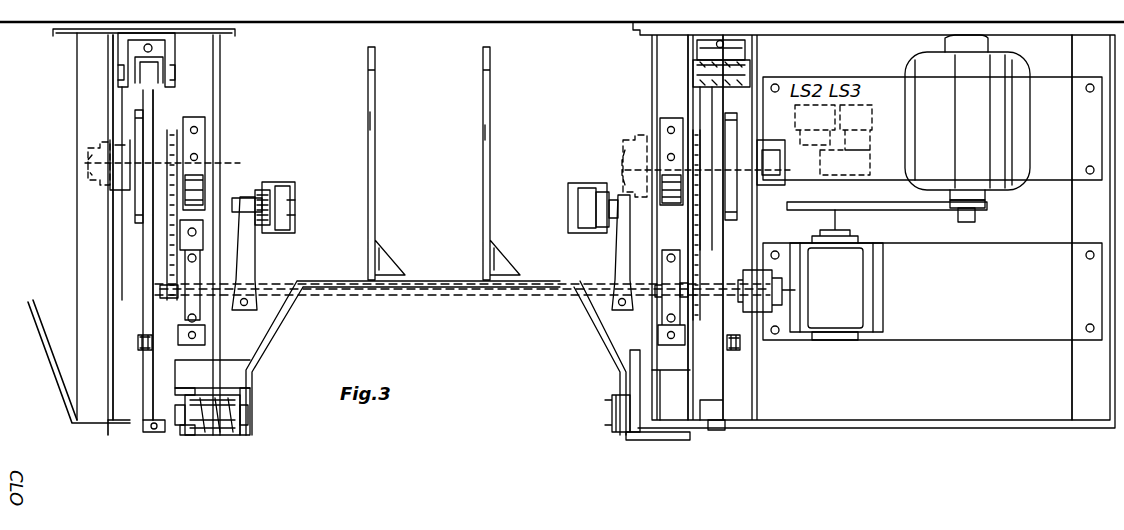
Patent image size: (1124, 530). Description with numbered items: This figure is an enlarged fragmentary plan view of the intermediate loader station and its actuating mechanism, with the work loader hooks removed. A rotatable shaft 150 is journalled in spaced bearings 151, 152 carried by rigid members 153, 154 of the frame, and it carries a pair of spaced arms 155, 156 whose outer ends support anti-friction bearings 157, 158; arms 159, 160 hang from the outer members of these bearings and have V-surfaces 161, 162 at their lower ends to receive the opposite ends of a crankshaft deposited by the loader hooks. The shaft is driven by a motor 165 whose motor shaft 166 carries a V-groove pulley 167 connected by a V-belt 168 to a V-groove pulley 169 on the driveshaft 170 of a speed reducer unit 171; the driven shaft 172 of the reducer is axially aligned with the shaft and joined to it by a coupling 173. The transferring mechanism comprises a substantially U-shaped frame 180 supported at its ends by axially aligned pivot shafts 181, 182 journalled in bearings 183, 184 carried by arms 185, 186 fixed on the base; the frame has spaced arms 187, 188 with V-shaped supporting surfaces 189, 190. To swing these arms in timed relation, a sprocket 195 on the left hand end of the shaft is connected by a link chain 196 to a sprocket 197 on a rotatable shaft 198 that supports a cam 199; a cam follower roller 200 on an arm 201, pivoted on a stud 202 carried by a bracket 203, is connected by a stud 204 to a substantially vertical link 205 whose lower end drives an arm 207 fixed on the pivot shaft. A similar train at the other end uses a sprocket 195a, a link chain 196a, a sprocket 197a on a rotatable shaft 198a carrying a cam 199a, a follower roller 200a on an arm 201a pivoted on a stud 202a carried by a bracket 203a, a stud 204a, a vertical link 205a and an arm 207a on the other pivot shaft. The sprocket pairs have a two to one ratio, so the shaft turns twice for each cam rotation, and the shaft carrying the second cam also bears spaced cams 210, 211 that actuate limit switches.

The rotatable shaft 150 is at (585, 297).
The bearing 151 is at (212, 302).
The bearing 152 is at (665, 300).
The rigid member 153 is at (205, 362).
The rigid member 154 is at (665, 378).
The arm 155 is at (250, 258).
The arm 156 is at (616, 262).
The anti-friction bearing 157 is at (258, 190).
The anti-friction bearing 158 is at (602, 192).
The arm 159 is at (285, 182).
The arm 160 is at (582, 188).
The V-surface 161 is at (292, 202).
The V-surface 162 is at (570, 202).
The motor 165 is at (1010, 132).
The motor shaft 166 is at (985, 204).
The V-groove pulley 167 is at (976, 218).
The V-belt 168 is at (935, 210).
The V-groove pulley 169 is at (862, 214).
The driveshaft 170 is at (835, 241).
The speed reducer unit 171 is at (855, 295).
The driven shaft 172 is at (790, 290).
The coupling 173 is at (765, 338).
The U-shaped frame 180 is at (287, 310).
The pivot shaft 181 is at (205, 437).
The pivot shaft 182 is at (612, 420).
The bearing 183 is at (222, 440).
The bearing 184 is at (648, 440).
The arm 185 is at (190, 436).
The arm 186 is at (634, 434).
The arm 187 is at (372, 114).
The arm 188 is at (485, 128).
The V-shaped supporting surface 189 is at (368, 65).
The V-shaped supporting surface 190 is at (490, 65).
The sprocket 195 is at (162, 292).
The sprocket 195a is at (690, 300).
The link chain 196 is at (168, 250).
The link chain 196a is at (700, 252).
The sprocket 197 is at (166, 135).
The sprocket 197a is at (697, 156).
The rotatable shaft 198 is at (130, 190).
The rotatable shaft 198a is at (628, 155).
The cam 199 is at (136, 130).
The cam 199a is at (738, 135).
The cam follower roller 200 is at (135, 160).
The follower roller 200a is at (765, 185).
The arm 201 is at (145, 268).
The arm 201a is at (720, 112).
The stud 202 is at (165, 70).
The stud 202a is at (695, 75).
The bracket 203 is at (170, 47).
The bracket 203a is at (768, 52).
The stud 204 is at (140, 340).
The stud 204a is at (735, 350).
The link 205 is at (140, 346).
The link 205a is at (727, 345).
The arm 207 is at (145, 395).
The arm 207a is at (720, 395).
The cam 210 is at (810, 150).
The cam 211 is at (848, 176).